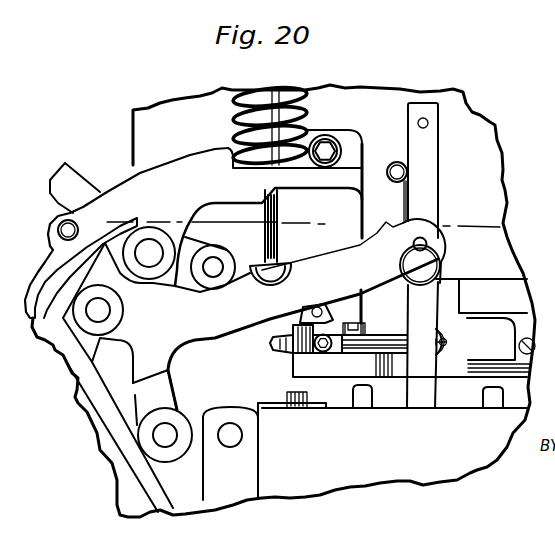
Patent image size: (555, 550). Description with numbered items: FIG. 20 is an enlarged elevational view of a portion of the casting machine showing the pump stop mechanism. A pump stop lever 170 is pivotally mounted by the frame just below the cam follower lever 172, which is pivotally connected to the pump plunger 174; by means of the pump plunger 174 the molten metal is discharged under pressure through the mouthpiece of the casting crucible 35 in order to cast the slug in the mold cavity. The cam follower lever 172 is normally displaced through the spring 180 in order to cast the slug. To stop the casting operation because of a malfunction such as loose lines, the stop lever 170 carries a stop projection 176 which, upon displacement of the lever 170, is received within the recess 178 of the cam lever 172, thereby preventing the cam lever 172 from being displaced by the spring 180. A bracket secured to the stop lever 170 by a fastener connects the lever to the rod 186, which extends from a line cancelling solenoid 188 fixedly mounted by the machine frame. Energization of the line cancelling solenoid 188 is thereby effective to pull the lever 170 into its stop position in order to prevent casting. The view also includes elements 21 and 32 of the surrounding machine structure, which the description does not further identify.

The curved lever / section line 21 is at (122, 242).
The frame 32 is at (84, 439).
The casting crucible 35 is at (348, 450).
The pump stop lever 170 is at (285, 360).
The cam follower lever 172 is at (323, 267).
The pump plunger 174 is at (420, 170).
The stop projection 176 is at (291, 337).
The recess 178 is at (292, 314).
The spring 180 is at (233, 137).
The rod 186 is at (388, 346).
The line cancelling solenoid 188 is at (485, 328).